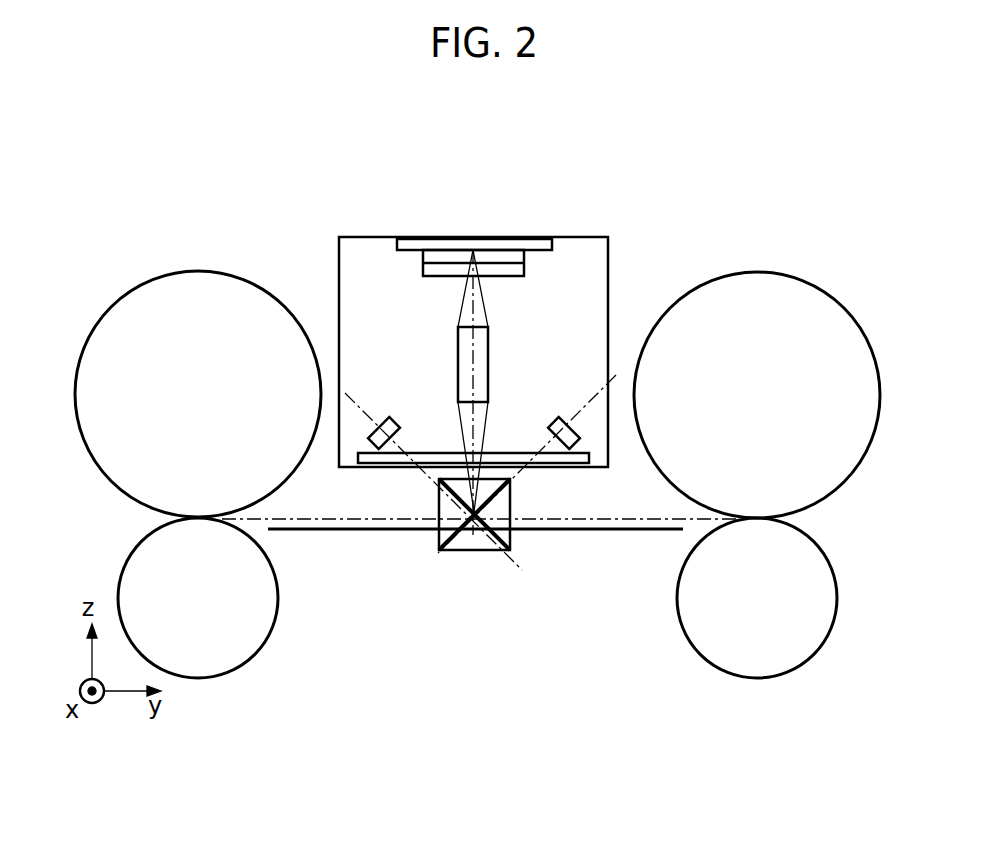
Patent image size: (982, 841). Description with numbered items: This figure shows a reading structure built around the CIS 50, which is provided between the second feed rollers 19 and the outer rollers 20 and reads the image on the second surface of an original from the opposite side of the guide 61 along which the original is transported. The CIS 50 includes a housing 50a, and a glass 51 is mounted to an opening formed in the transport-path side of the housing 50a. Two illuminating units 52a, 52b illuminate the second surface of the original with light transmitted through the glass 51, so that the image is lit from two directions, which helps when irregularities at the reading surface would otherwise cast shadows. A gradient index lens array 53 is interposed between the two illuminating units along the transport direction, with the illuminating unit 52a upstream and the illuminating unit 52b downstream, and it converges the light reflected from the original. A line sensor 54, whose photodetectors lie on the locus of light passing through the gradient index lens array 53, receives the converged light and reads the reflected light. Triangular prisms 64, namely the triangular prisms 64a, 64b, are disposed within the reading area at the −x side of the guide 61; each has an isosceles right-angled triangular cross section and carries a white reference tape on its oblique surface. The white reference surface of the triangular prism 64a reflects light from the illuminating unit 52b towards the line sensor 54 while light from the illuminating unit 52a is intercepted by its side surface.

The second feed rollers 19 is at (212, 272).
The outer rollers 20 is at (760, 272).
The CIS 50 is at (499, 369).
The housing 50a is at (608, 295).
The glass 51 is at (574, 463).
The illuminating unit 52a is at (390, 417).
The illuminating unit 52b is at (561, 418).
The gradient index lens array 53 is at (490, 345).
The line sensor 54 is at (398, 252).
The guide 61 is at (313, 532).
The triangular prisms 64 is at (481, 555).
The triangular prism 64a is at (440, 538).
The triangular prism 64b is at (509, 526).